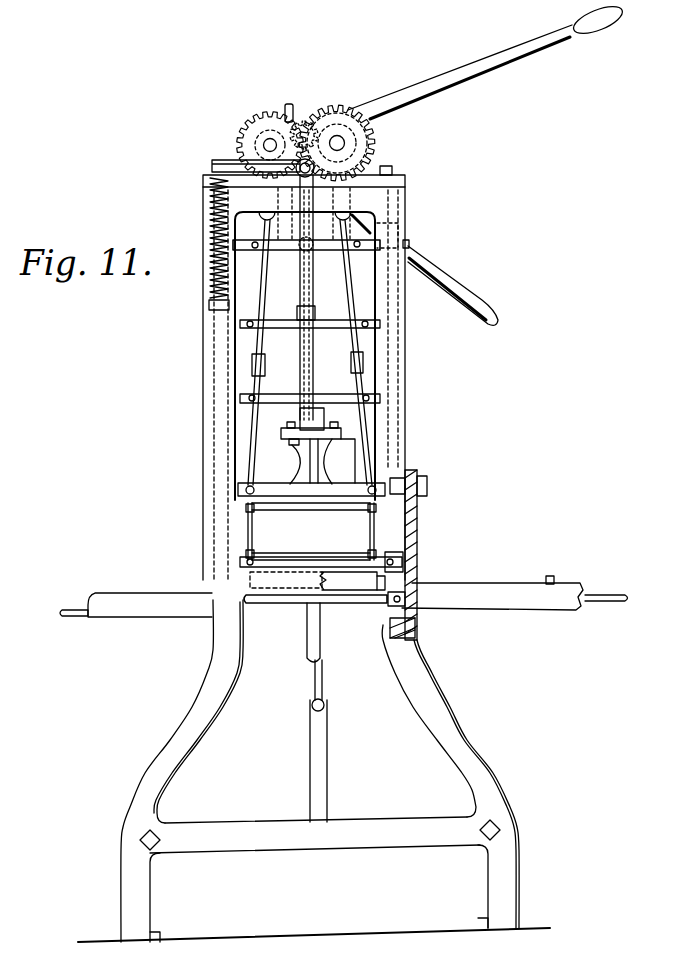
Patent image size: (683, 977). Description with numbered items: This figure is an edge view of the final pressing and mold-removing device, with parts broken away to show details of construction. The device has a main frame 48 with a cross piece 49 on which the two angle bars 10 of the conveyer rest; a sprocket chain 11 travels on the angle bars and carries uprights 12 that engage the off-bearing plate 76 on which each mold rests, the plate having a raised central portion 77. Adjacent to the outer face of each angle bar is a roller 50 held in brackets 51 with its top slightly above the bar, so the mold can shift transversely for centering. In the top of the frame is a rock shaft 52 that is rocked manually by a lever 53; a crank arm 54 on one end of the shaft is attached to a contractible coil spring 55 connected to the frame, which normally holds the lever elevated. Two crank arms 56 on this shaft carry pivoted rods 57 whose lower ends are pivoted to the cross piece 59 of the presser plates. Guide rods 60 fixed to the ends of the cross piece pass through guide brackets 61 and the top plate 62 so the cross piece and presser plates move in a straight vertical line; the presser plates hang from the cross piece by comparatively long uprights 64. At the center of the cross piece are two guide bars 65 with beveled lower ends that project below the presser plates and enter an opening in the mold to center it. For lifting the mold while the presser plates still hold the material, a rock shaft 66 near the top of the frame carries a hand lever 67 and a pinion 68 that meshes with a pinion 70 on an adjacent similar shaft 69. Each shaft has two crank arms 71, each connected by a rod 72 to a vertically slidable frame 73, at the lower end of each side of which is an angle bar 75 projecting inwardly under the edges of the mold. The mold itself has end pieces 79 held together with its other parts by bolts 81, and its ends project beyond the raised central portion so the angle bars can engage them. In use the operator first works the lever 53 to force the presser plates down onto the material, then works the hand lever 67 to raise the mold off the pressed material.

The angle bars 10 is at (335, 600).
The sprocket chain 11 is at (602, 600).
The uprights 12 is at (552, 578).
The main frame 48 is at (410, 684).
The cross piece 49 is at (416, 628).
The roller 50 is at (360, 600).
The brackets 51 is at (410, 598).
The rock shaft 52 is at (308, 178).
The lever 53 is at (462, 294).
The crank arm 54 is at (238, 161).
The contractible coil spring 55 is at (209, 208).
The crank arms 56 is at (310, 244).
The rods 57 is at (310, 382).
The cross piece 59 is at (318, 420).
The guide rods 60 is at (296, 388).
The guide brackets 61 is at (297, 322).
The top plate 62 is at (303, 123).
The uprights 64 is at (300, 468).
The guide bars 65 is at (366, 458).
The rock shaft 66 is at (271, 138).
The hand lever 67 is at (474, 66).
The pinion 68 is at (258, 124).
The shaft 69 is at (346, 143).
The pinion 70 is at (343, 124).
The crank arms 71 is at (254, 212).
The rods 72 is at (268, 272).
The vertically slidable frame 73 is at (414, 478).
The angle bar 75 is at (278, 563).
The off-bearing plate 76 is at (374, 604).
The raised central portion 77 is at (354, 572).
The end pieces 79 is at (340, 556).
The bolts 81 is at (347, 512).